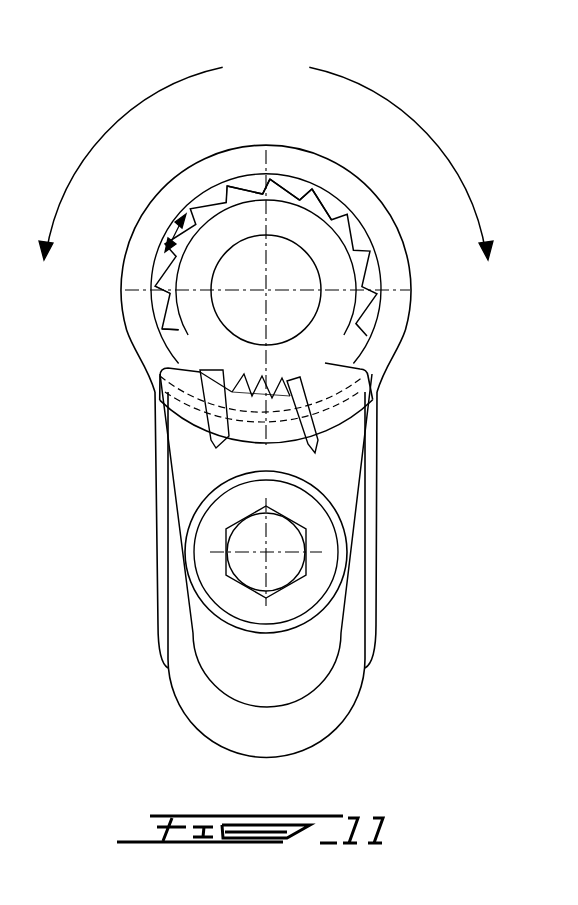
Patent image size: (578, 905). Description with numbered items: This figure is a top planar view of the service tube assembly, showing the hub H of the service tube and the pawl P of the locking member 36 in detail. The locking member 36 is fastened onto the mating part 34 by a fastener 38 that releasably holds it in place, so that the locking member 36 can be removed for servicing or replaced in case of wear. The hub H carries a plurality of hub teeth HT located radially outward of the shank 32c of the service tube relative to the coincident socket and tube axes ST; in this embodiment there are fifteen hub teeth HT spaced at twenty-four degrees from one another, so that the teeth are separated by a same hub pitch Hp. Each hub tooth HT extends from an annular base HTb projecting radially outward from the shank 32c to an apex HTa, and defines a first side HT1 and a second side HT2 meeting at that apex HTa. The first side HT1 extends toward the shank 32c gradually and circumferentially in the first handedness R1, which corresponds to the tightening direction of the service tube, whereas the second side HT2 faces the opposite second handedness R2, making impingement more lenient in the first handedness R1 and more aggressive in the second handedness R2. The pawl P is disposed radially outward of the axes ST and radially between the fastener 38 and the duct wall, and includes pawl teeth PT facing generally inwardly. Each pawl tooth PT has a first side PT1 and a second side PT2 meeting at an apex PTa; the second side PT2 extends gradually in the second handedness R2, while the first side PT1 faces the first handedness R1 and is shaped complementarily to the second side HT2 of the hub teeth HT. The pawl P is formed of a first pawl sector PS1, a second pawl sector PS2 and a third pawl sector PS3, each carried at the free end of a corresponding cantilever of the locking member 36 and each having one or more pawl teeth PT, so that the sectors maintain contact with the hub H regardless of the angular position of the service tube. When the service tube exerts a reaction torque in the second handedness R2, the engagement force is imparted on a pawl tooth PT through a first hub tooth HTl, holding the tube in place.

The first handedness R1 is at (426, 133).
The second handedness R2 is at (106, 133).
The hub teeth HT is at (259, 167).
The apex of hub tooth HTa is at (270, 172).
The first side of hub tooth HT1 is at (303, 183).
The second side of hub tooth HT2 is at (258, 172).
The annular base HTb is at (340, 200).
The hub pitch Hp is at (167, 236).
The first hub tooth HTl is at (195, 371).
The shank 32c is at (350, 248).
The socket axis and tube axis ST is at (266, 284).
The hub H is at (378, 322).
The pawl P is at (403, 386).
The pawl tooth PT is at (242, 256).
The second side of pawl tooth PT2 is at (290, 252).
The apex of pawl tooth PTa is at (232, 325).
The first side of pawl tooth PT1 is at (197, 362).
The first pawl sector PS1 is at (183, 385).
The second pawl sector PS2 is at (284, 440).
The third pawl sector PS3 is at (345, 406).
The fastener 38 is at (222, 588).
The locking member 36 is at (322, 633).
The mating part 34 is at (330, 705).